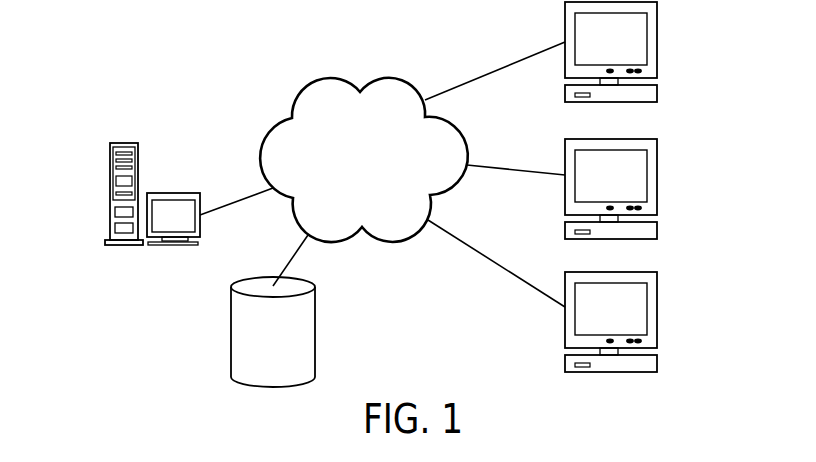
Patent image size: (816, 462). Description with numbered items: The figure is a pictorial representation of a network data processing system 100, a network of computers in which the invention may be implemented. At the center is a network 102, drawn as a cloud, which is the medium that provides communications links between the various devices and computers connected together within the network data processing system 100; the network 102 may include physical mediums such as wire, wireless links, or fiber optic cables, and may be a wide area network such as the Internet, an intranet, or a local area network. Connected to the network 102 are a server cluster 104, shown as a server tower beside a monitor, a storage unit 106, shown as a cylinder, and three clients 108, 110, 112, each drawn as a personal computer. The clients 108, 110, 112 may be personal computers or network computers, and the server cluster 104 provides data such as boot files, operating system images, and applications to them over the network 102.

The network data processing system 100 is at (205, 68).
The network 102 is at (383, 196).
The server cluster 104 is at (177, 193).
The storage unit 106 is at (315, 323).
The client 108 is at (657, 33).
The client 110 is at (657, 176).
The client 112 is at (657, 312).